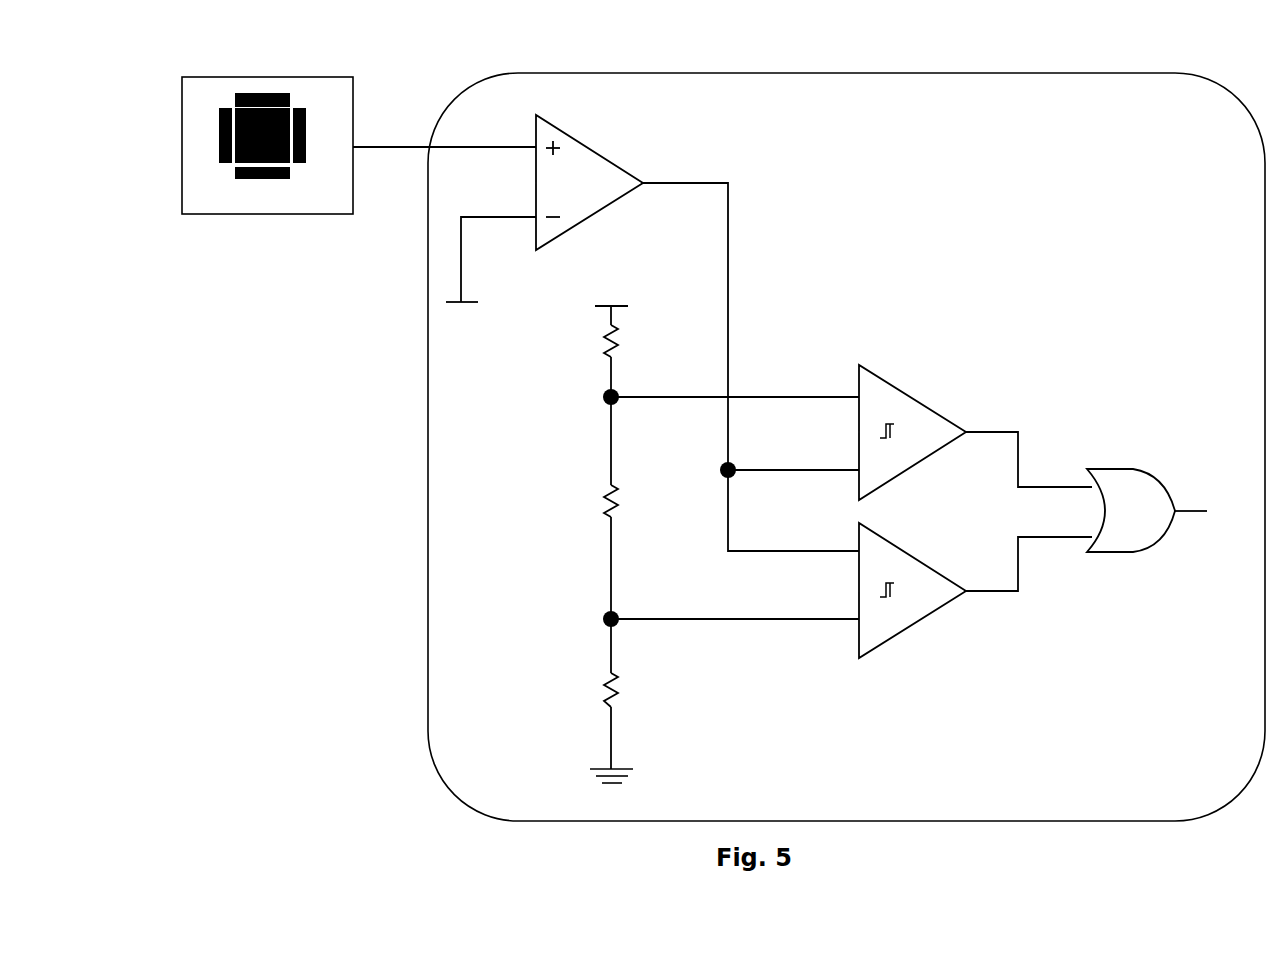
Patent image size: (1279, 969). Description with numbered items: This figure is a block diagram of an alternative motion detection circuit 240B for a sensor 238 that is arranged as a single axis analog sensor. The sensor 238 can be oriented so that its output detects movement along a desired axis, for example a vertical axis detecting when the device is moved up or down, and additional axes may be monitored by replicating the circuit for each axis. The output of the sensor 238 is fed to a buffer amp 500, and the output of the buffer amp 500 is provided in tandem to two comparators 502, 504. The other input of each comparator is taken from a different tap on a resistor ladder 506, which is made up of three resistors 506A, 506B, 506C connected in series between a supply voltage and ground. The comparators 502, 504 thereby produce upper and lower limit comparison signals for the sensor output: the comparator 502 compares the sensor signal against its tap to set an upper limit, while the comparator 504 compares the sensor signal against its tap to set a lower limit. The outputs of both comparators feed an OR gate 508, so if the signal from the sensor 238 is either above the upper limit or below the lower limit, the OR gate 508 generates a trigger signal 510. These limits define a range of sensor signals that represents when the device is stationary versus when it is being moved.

The sensor 238 is at (254, 177).
The alternative circuit 240B is at (846, 421).
The buffer amp 500 is at (652, 333).
The comparator 502 is at (975, 432).
The comparator 504 is at (975, 590).
The resistor ladder 506 is at (660, 535).
The resistor 506A is at (642, 341).
The resistor 506B is at (642, 501).
The resistor 506C is at (641, 690).
The OR gate 508 is at (1131, 498).
The trigger signal 510 is at (1210, 512).